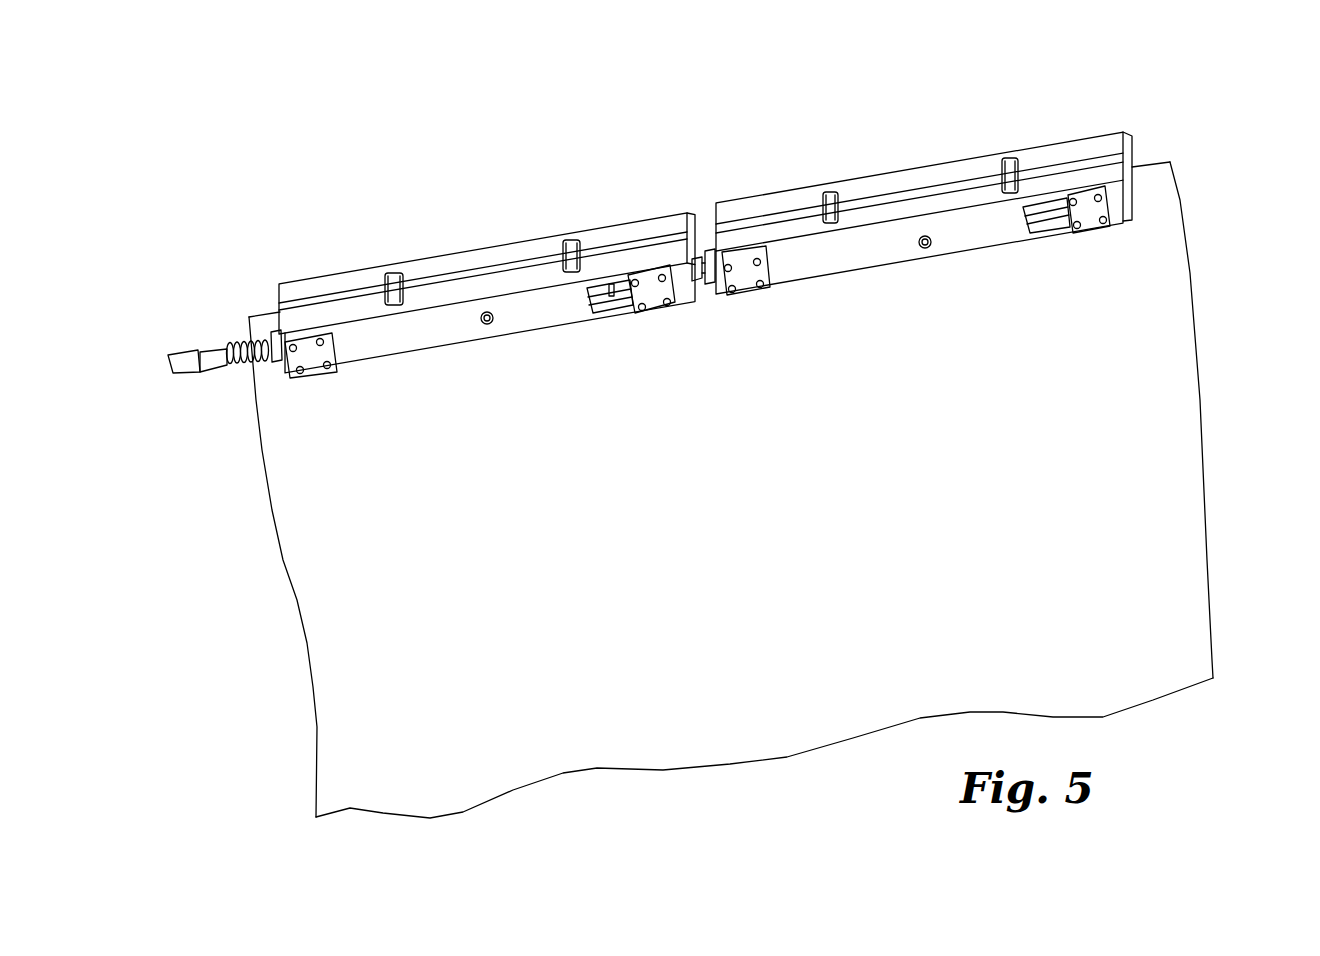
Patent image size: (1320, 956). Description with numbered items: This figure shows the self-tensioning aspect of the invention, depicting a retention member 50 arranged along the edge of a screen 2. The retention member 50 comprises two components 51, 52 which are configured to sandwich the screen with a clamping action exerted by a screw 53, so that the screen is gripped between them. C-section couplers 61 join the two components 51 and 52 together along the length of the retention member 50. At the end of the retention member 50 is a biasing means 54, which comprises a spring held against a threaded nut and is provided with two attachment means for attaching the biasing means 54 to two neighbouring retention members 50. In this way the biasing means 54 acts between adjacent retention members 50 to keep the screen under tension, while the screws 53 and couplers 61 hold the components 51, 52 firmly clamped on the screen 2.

The panel 2 is at (1160, 503).
The retention member 50 is at (669, 226).
The component 51 is at (1108, 138).
The component 52 is at (1134, 198).
The screw 53 is at (492, 325).
The biasing means 54 is at (713, 283).
The C-section coupler 61 is at (393, 278).